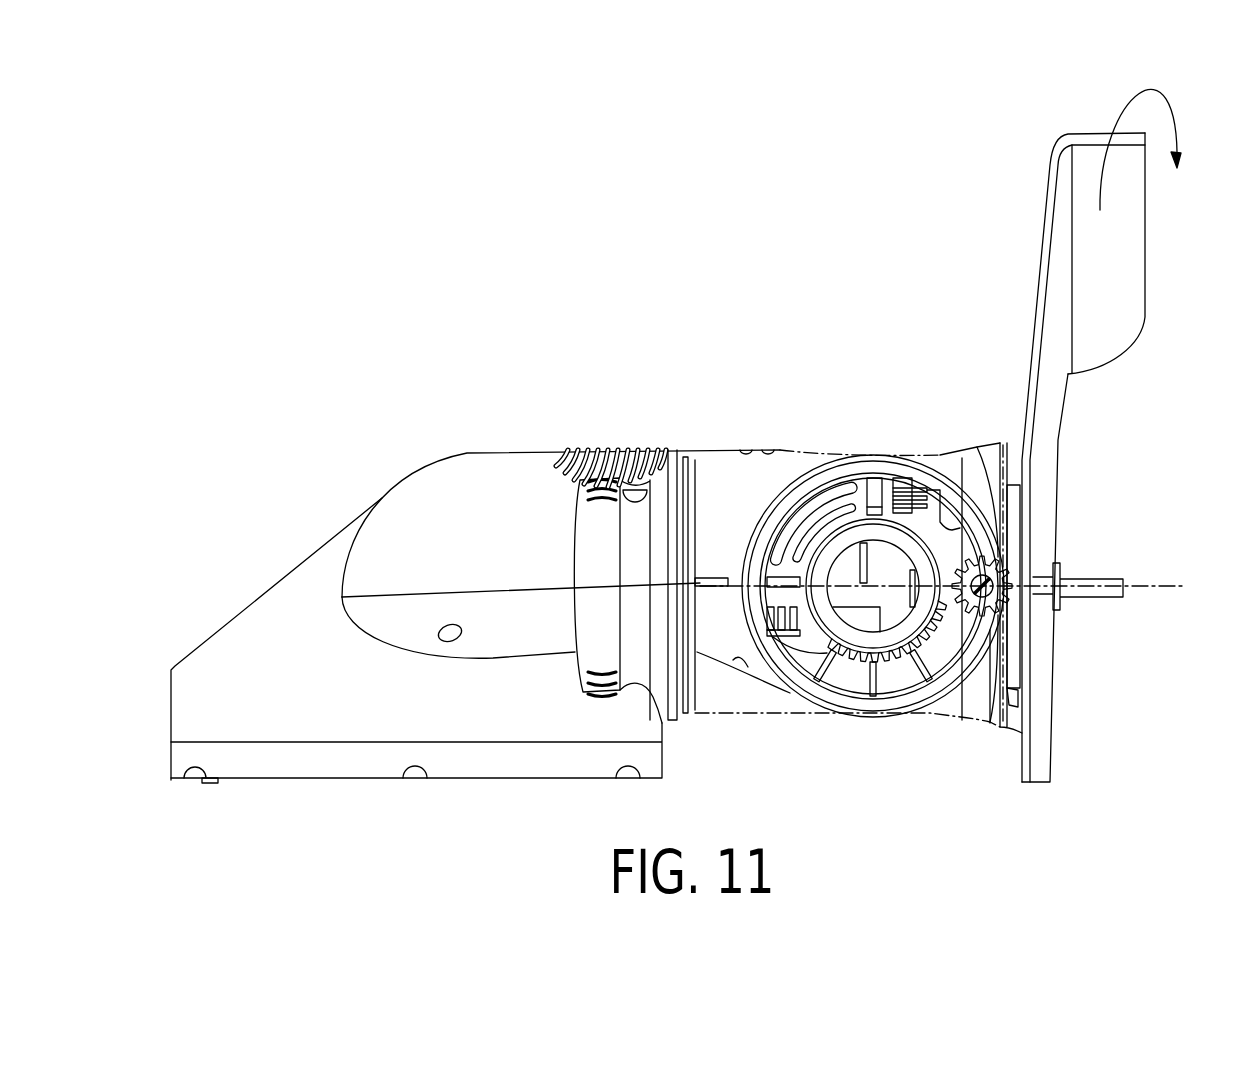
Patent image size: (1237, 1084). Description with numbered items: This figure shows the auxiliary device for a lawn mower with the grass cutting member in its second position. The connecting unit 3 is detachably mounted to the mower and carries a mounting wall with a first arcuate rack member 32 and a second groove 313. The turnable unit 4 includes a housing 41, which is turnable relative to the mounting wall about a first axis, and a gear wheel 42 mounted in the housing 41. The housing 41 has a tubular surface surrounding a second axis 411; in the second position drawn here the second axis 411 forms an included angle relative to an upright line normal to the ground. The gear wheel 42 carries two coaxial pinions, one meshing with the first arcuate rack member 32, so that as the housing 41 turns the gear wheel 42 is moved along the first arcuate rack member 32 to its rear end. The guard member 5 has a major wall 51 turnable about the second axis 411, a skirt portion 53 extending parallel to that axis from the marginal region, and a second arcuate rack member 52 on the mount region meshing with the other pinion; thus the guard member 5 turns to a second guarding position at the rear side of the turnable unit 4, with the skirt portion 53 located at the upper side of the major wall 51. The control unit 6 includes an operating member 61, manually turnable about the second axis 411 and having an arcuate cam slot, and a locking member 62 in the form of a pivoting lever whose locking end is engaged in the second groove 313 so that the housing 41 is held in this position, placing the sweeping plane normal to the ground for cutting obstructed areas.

The connecting unit 3 is at (551, 449).
The second groove 313 is at (800, 587).
The first arcuate rack member 32 is at (950, 615).
The turnable unit 4 is at (962, 530).
The housing 41 is at (717, 490).
The second axis 411 is at (1135, 575).
The gear wheel 42 is at (982, 453).
The guard member 5 is at (1083, 422).
The major wall 51 is at (1033, 343).
The second arcuate rack member 52 is at (1003, 624).
The skirt portion 53 is at (1137, 222).
The control unit 6 is at (548, 548).
The operating member 61 is at (592, 533).
The locking member 62 is at (728, 585).